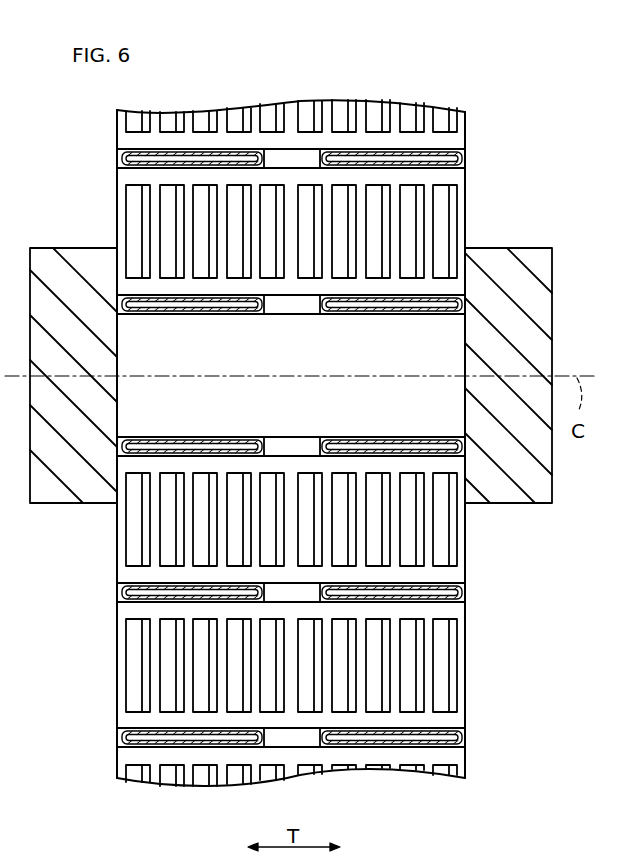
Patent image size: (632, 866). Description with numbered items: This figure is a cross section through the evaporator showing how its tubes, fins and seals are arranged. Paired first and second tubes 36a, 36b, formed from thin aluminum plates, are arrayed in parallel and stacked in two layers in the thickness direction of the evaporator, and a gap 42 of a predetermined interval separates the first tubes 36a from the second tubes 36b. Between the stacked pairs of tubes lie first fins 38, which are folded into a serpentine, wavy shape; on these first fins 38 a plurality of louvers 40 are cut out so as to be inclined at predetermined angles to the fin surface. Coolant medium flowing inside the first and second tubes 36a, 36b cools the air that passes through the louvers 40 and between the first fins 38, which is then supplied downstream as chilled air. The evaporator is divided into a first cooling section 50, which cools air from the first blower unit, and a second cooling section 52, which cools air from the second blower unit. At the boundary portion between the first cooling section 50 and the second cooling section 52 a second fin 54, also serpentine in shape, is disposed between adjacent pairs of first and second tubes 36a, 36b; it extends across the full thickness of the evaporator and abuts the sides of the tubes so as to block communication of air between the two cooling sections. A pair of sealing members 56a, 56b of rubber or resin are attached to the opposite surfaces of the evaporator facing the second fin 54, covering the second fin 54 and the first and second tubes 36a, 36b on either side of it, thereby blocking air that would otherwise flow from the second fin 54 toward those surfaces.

The first tube 36a is at (200, 314).
The second tube 36b is at (402, 314).
The first fin 38 is at (458, 177).
The louver 40 is at (135, 120).
The gap 42 is at (320, 314).
The first cooling section 50 is at (287, 718).
The second cooling section 52 is at (296, 181).
The second fin 54 is at (455, 357).
The sealing member 56a is at (45, 504).
The sealing member 56b is at (540, 504).